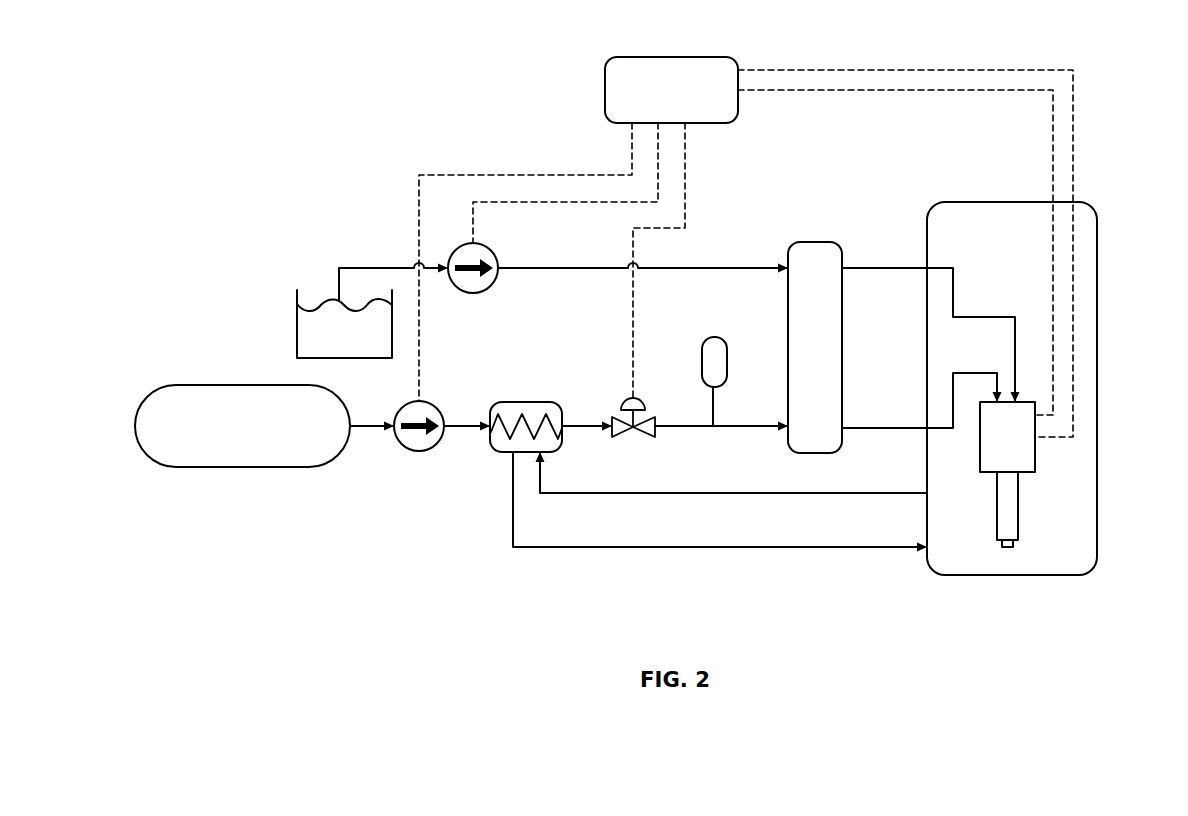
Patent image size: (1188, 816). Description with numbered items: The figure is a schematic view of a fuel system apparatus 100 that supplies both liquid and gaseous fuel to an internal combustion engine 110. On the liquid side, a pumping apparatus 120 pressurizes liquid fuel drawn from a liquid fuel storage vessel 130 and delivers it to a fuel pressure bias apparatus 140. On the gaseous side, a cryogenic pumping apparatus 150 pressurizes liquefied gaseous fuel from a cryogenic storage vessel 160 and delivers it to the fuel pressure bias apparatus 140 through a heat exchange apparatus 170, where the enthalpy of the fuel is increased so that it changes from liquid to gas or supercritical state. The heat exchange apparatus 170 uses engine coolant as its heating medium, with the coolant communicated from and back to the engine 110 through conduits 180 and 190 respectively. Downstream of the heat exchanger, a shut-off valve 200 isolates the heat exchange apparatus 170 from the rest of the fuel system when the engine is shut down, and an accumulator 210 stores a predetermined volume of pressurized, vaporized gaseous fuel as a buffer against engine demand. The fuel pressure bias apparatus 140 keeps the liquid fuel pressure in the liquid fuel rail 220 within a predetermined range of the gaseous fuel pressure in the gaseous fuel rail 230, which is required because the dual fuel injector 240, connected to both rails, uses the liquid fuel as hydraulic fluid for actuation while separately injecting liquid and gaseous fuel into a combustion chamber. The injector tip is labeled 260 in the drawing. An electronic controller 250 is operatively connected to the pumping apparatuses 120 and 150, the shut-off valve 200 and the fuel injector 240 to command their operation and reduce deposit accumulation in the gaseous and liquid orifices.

The fuel system apparatus 100 is at (330, 130).
The internal combustion engine 110 is at (1097, 393).
The pumping apparatus 120 is at (474, 293).
The liquid fuel storage vessel 130 is at (365, 336).
The fuel pressure bias apparatus 140 is at (834, 359).
The pumping apparatus 150 is at (421, 452).
The cryogenic storage vessel 160 is at (264, 439).
The heat exchange apparatus 170 is at (536, 401).
The conduit 180 is at (713, 493).
The conduit 190 is at (768, 548).
The shut-off valve 200 is at (659, 458).
The accumulator 210 is at (718, 336).
The liquid fuel rail 220 is at (887, 267).
The gaseous fuel rail 230 is at (880, 427).
The dual fuel injector 240 is at (1007, 471).
The electronic controller 250 is at (692, 100).
The nozzle 260 is at (1017, 545).